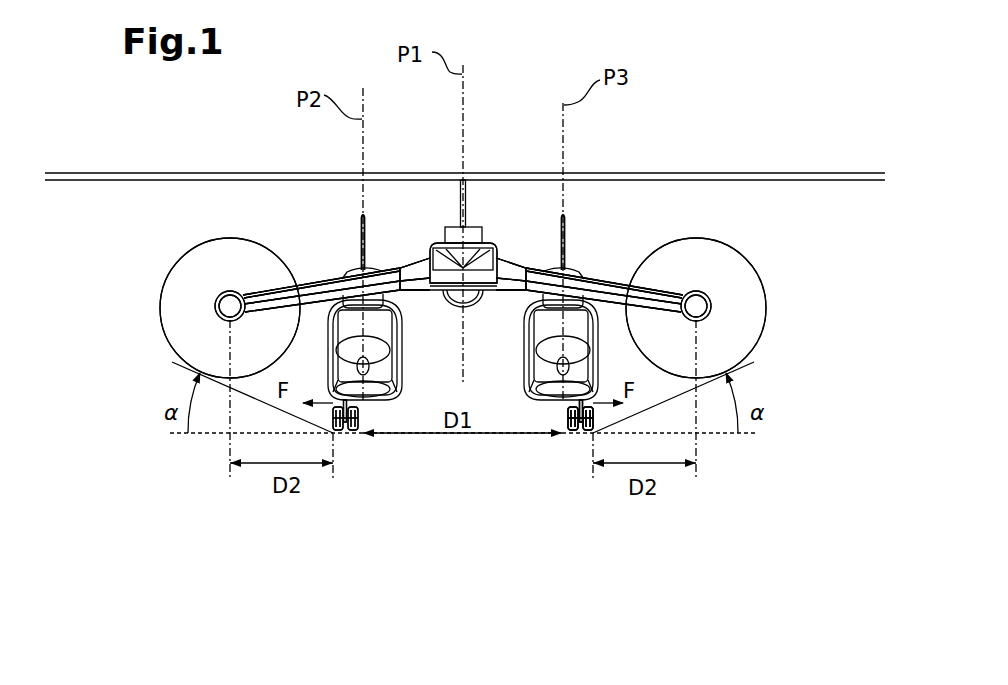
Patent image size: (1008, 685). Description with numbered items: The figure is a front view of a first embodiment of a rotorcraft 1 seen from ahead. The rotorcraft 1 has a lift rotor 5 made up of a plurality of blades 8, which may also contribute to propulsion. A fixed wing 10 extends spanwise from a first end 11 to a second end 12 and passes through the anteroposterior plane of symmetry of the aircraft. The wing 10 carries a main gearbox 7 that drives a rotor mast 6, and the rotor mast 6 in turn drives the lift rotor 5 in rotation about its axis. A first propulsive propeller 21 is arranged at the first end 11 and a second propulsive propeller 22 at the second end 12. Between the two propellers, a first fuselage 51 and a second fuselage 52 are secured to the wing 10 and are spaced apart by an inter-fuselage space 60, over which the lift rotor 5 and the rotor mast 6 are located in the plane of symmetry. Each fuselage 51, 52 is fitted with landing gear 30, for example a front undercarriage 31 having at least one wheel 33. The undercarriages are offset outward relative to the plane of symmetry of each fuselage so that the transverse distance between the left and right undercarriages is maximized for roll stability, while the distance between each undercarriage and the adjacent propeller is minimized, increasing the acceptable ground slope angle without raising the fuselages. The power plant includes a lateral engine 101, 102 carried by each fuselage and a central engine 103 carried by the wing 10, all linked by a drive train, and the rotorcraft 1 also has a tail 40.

The rotorcraft 1 is at (780, 223).
The lift rotor 5 is at (592, 150).
The rotor mast 6 is at (460, 198).
The main gearbox 7 is at (492, 250).
The blades 8 is at (158, 170).
The wing 10 is at (617, 260).
The first end 11 is at (711, 302).
The second end 12 is at (216, 305).
The first propulsive propeller 21 is at (735, 375).
The second propulsive propeller 22 is at (195, 375).
The landing gear 30 is at (333, 490).
The front undercarriage 31 is at (345, 442).
The wheel 33 is at (585, 438).
The tail 40 is at (347, 218).
The first fuselage 51 is at (330, 373).
The second fuselage 52 is at (596, 373).
The inter-fuselage space 60 is at (446, 366).
The lateral engine 101 is at (346, 274).
The lateral engine 102 is at (578, 276).
The central engine 103 is at (474, 306).